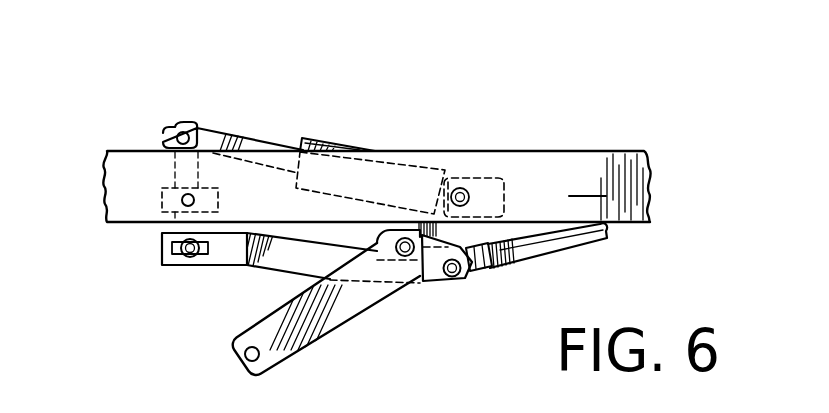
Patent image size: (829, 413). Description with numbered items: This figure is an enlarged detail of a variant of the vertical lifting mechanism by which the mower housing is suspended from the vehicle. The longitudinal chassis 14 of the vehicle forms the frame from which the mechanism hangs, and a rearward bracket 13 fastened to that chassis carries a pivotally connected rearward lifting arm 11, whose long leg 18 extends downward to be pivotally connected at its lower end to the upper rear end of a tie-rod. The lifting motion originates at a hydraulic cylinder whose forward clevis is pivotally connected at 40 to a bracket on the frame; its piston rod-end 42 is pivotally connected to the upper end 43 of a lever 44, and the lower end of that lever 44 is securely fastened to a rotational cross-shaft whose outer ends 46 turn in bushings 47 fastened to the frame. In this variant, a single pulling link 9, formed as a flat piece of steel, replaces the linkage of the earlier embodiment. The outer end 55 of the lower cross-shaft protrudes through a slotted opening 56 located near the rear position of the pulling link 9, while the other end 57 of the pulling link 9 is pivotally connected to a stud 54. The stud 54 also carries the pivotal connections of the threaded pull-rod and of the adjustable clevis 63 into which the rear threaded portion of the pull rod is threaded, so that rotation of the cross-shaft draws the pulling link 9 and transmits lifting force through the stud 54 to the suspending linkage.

The pulling link 9 is at (247, 266).
The rearward lifting arm 11 is at (350, 301).
The rearward bracket 13 is at (423, 279).
The longitudinal chassis 14 is at (587, 178).
The long leg of rear lifting arm 18 is at (263, 332).
The pivotal connection 40 is at (376, 162).
The piston rod-end 42 is at (166, 127).
The upper end of lever 43 is at (194, 126).
The lever 44 is at (187, 178).
The outer end of rotational cross-shaft 46 is at (178, 205).
The bushing 47 is at (162, 200).
The stud 54 is at (452, 274).
The outer end of lower cross-shaft 55 is at (180, 263).
The slotted opening 56 is at (203, 244).
The other end of pulling link 57 is at (470, 273).
The adjustable clevis 63 is at (500, 270).